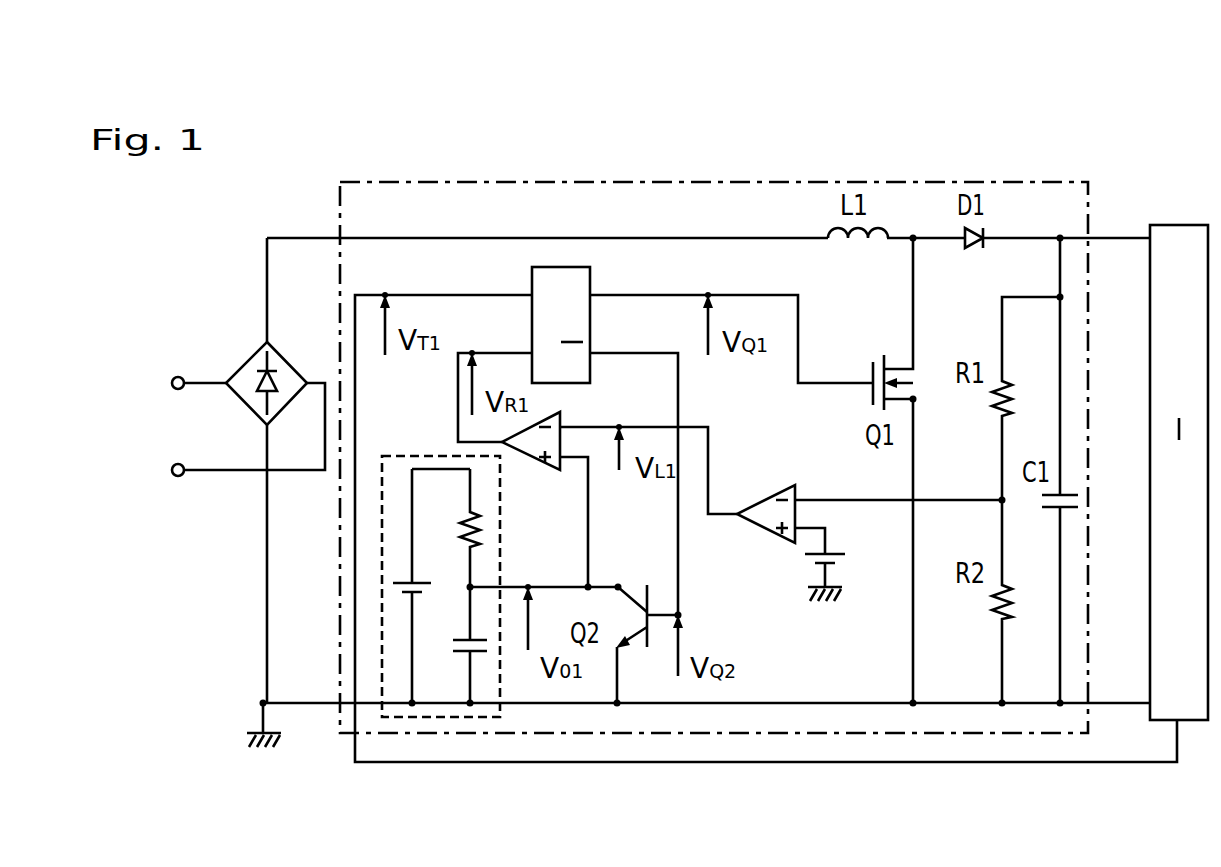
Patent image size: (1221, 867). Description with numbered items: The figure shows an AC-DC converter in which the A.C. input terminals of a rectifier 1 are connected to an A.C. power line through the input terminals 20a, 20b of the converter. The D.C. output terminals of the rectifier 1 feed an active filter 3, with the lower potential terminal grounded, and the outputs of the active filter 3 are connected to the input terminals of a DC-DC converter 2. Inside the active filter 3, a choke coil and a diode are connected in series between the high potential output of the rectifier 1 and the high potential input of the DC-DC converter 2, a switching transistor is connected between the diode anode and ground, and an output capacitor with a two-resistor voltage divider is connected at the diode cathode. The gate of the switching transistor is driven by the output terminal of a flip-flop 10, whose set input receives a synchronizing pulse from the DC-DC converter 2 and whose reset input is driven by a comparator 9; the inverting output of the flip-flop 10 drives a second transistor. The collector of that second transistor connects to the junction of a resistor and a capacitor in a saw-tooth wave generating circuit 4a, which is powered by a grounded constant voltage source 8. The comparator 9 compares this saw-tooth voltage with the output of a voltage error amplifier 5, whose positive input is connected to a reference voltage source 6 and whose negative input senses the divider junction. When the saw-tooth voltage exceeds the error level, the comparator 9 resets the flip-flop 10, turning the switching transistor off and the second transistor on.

The rectifier 1 is at (250, 366).
The DC-DC converter 2 is at (1184, 237).
The active filter 3 is at (1076, 218).
The saw-tooth wave generating circuit 4a is at (441, 555).
The voltage error amplifier 5 is at (762, 506).
The reference voltage source 6 is at (800, 561).
The constant voltage source 8 is at (420, 586).
The comparator 9 is at (533, 458).
The flip-flop 10 is at (532, 276).
The input terminal 20a is at (177, 376).
The input terminal 20b is at (175, 477).